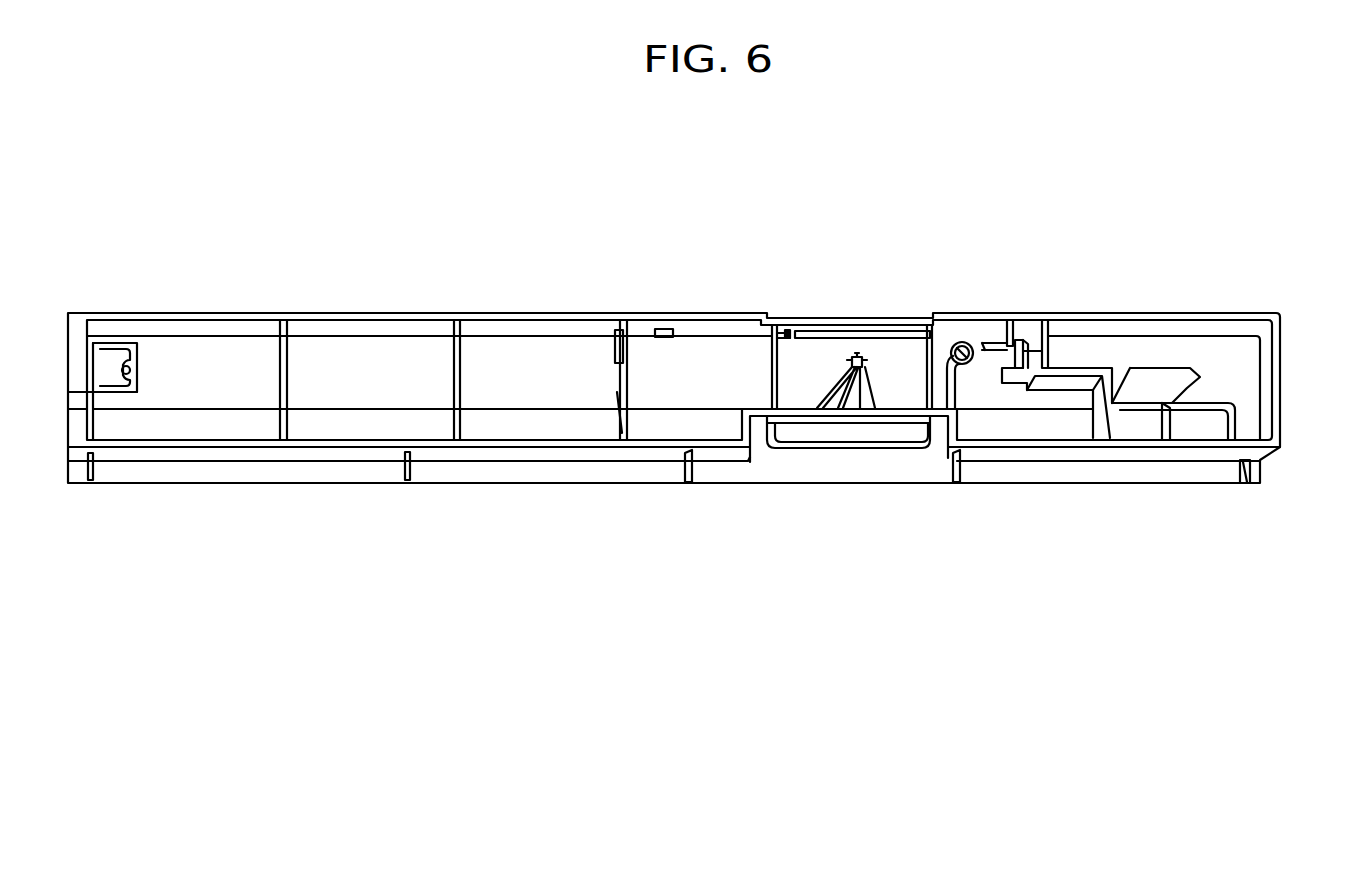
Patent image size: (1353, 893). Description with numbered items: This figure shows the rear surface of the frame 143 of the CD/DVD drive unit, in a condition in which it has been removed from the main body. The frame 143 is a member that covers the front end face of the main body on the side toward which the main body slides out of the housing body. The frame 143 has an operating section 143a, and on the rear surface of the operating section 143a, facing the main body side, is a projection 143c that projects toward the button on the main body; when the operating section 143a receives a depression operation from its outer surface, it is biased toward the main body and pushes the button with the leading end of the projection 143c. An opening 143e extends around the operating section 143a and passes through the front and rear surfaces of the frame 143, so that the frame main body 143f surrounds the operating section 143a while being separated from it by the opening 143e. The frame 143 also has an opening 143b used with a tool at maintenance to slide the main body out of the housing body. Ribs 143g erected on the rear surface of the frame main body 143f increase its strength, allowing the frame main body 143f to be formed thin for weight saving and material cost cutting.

The frame 143 is at (1277, 378).
The operating section 143a is at (798, 435).
The opening 143b is at (970, 360).
The projection 143c is at (848, 365).
The opening 143e is at (770, 382).
The frame main body 143f is at (697, 355).
The ribs 143g is at (460, 393).